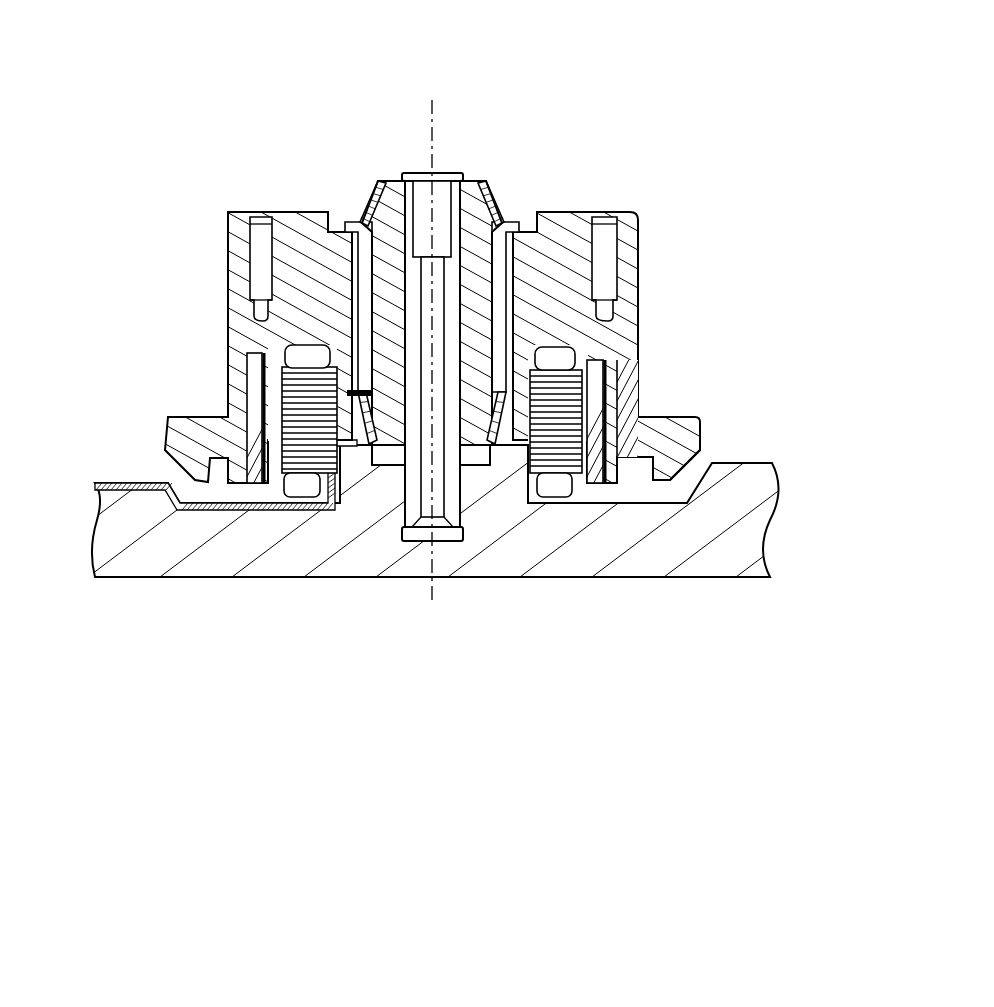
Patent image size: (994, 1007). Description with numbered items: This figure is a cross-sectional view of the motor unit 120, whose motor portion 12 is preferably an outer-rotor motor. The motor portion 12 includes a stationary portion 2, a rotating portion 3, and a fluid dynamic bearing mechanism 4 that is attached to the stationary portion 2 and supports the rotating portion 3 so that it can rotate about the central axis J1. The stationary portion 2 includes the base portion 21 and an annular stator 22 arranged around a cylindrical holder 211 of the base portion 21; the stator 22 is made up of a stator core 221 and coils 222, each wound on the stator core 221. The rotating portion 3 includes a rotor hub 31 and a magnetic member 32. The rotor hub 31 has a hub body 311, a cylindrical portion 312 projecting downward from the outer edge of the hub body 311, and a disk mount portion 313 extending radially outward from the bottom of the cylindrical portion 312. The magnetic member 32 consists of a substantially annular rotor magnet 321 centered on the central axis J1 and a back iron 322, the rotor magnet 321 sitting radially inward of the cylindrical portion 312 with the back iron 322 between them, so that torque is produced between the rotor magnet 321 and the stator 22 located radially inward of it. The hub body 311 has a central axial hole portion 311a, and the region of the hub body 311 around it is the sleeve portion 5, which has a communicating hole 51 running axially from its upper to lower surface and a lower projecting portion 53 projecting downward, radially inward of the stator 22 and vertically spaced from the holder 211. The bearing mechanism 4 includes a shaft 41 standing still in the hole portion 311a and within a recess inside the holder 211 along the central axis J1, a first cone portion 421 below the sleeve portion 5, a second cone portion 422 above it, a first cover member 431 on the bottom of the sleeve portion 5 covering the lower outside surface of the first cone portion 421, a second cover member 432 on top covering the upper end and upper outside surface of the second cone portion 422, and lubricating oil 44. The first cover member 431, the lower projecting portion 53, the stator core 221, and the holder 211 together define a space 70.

The motor unit 120 is at (188, 42).
The motor portion 12 is at (256, 110).
The stationary portion 2 is at (215, 662).
The base portion 21 is at (250, 530).
The holder 211 is at (291, 497).
The stator 22 is at (115, 350).
The stator core 221 is at (263, 397).
The coils 222 is at (282, 356).
The rotating portion 3 is at (812, 235).
The rotor hub 31 is at (742, 271).
The hub body 311 is at (563, 313).
The hole portion 311a is at (382, 265).
The cylindrical portion 312 is at (628, 404).
The disk mount portion 313 is at (688, 438).
The magnetic member 32 is at (750, 337).
The rotor magnet 321 is at (605, 365).
The back iron 322 is at (604, 392).
The fluid dynamic bearing mechanism 4 is at (540, 118).
The shaft 41 is at (452, 498).
The first cone portion 421 is at (475, 440).
The second cone portion 422 is at (481, 215).
The first cover member 431 is at (500, 425).
The second cover member 432 is at (505, 212).
The lubricating oil 44 is at (406, 529).
The sleeve portion 5 is at (357, 226).
The communicating hole 51 is at (265, 215).
The lower projecting portion 53 is at (254, 318).
The space 70 is at (356, 447).
The central axis J1 is at (426, 127).